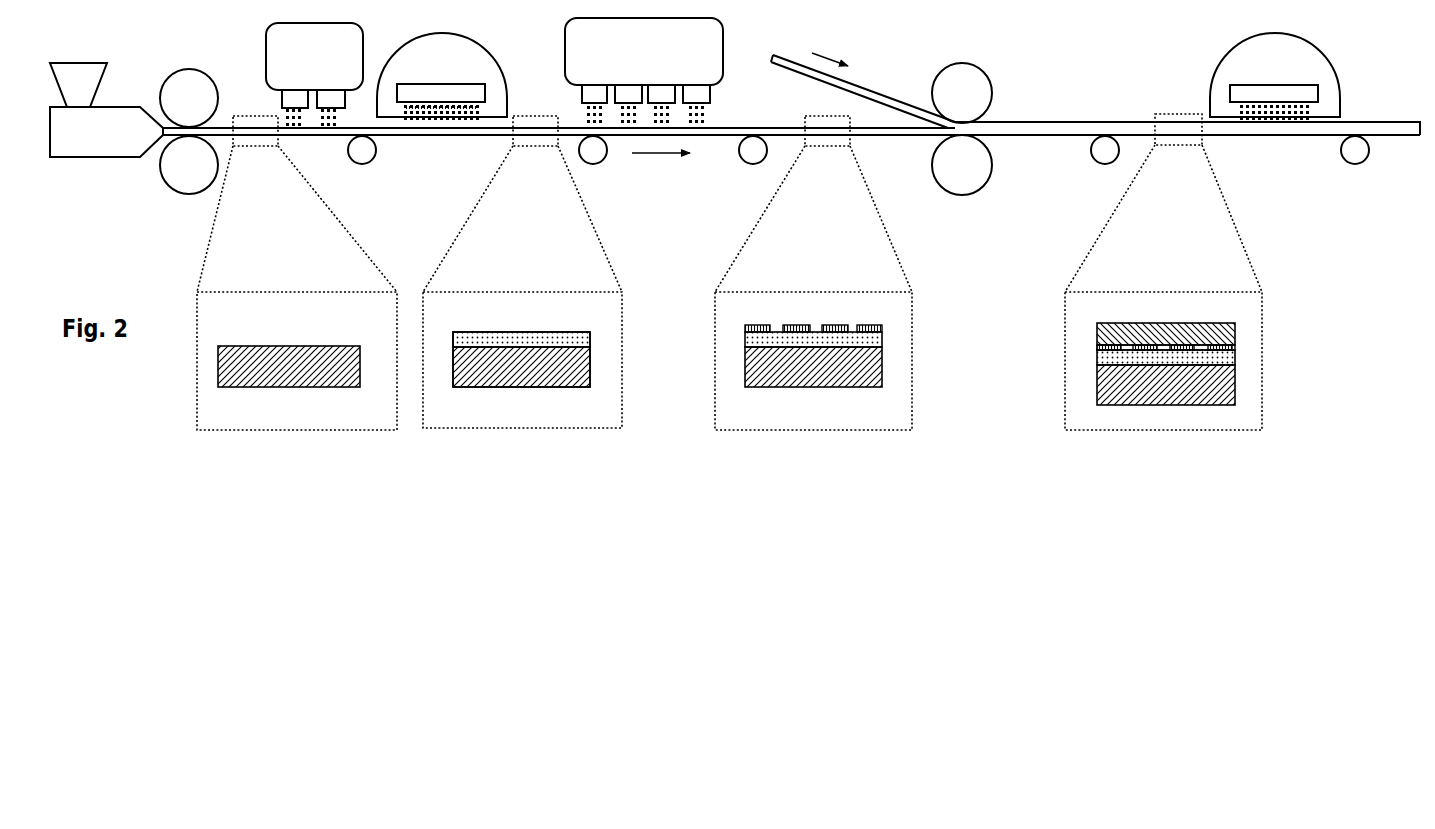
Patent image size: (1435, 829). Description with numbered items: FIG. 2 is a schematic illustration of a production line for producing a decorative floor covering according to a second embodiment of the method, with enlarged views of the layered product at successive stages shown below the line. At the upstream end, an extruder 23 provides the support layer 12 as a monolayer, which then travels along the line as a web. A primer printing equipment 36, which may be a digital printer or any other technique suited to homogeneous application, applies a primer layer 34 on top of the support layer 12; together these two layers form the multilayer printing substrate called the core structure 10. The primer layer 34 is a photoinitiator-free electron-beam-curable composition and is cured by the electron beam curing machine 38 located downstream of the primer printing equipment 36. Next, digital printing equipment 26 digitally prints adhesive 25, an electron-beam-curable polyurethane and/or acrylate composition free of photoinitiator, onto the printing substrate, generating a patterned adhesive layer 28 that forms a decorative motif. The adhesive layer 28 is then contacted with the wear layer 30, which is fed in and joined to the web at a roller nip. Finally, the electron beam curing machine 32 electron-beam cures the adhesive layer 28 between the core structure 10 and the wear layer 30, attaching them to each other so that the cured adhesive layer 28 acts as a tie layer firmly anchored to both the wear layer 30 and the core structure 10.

The core structure 10 is at (606, 317).
The support layer 12 is at (317, 345).
The extruder 23 is at (93, 162).
The adhesive 25 is at (707, 117).
The digital printing equipment 26 is at (688, 63).
The adhesive layer 28 is at (880, 325).
The wear layer 30 is at (875, 80).
The electron beam curing machine 32 is at (1206, 70).
The primer layer 34 is at (510, 330).
The primer printing equipment 36 is at (364, 30).
The electron beam curing machine 38 is at (488, 40).